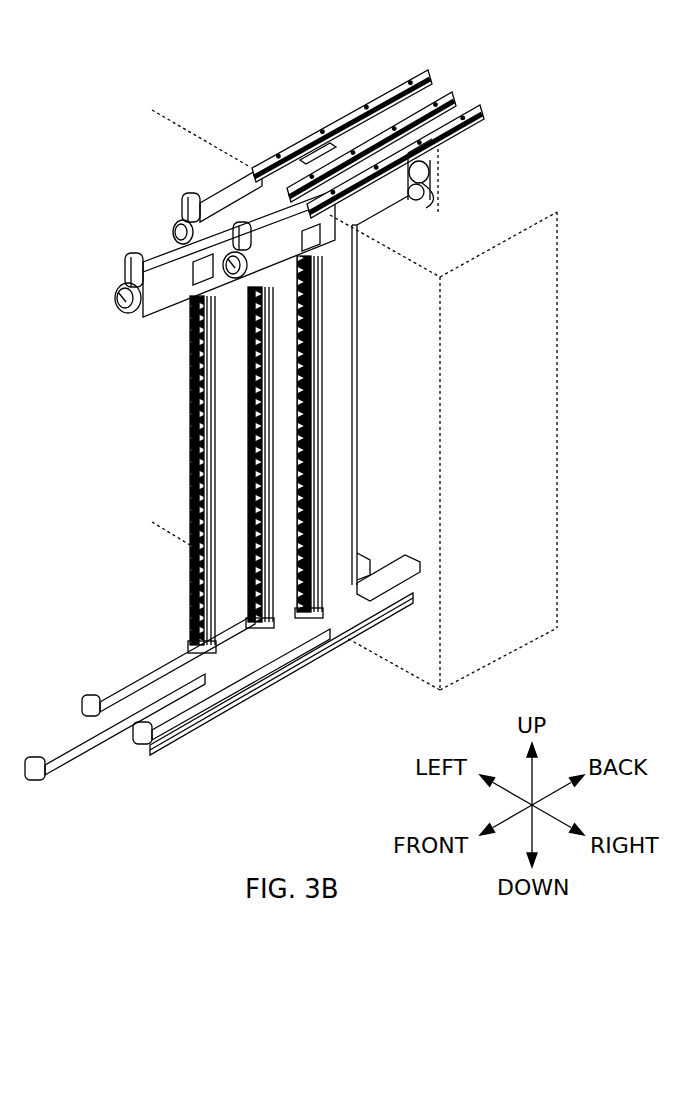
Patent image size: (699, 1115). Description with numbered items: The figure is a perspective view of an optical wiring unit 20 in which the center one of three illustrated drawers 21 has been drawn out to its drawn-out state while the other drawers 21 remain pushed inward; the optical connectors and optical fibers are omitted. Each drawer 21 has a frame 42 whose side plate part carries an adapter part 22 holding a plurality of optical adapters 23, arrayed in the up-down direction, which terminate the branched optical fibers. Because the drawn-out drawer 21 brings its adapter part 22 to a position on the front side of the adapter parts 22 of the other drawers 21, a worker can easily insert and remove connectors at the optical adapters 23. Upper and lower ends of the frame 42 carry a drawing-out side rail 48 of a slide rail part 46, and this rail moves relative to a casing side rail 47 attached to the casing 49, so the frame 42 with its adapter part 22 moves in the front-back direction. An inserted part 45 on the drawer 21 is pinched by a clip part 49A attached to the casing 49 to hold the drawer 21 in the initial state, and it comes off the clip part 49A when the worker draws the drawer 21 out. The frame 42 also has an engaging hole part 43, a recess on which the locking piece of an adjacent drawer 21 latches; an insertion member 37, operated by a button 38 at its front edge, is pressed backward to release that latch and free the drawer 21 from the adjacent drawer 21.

The optical wiring unit 20 is at (72, 246).
The drawer 21 is at (246, 424).
The adapter part 22 is at (189, 450).
The optical adapter 23 is at (189, 450).
The insertion member 37 is at (162, 170).
The button 38 is at (137, 265).
The frame 42 is at (155, 676).
The engaging hole part 43 is at (196, 262).
The inserted part 45 is at (432, 172).
The slide rail part 46 is at (432, 72).
The casing side rail 47 is at (314, 157).
The drawing-out side rail 48 is at (251, 208).
The casing 49 is at (482, 252).
The clip part 49A is at (430, 195).